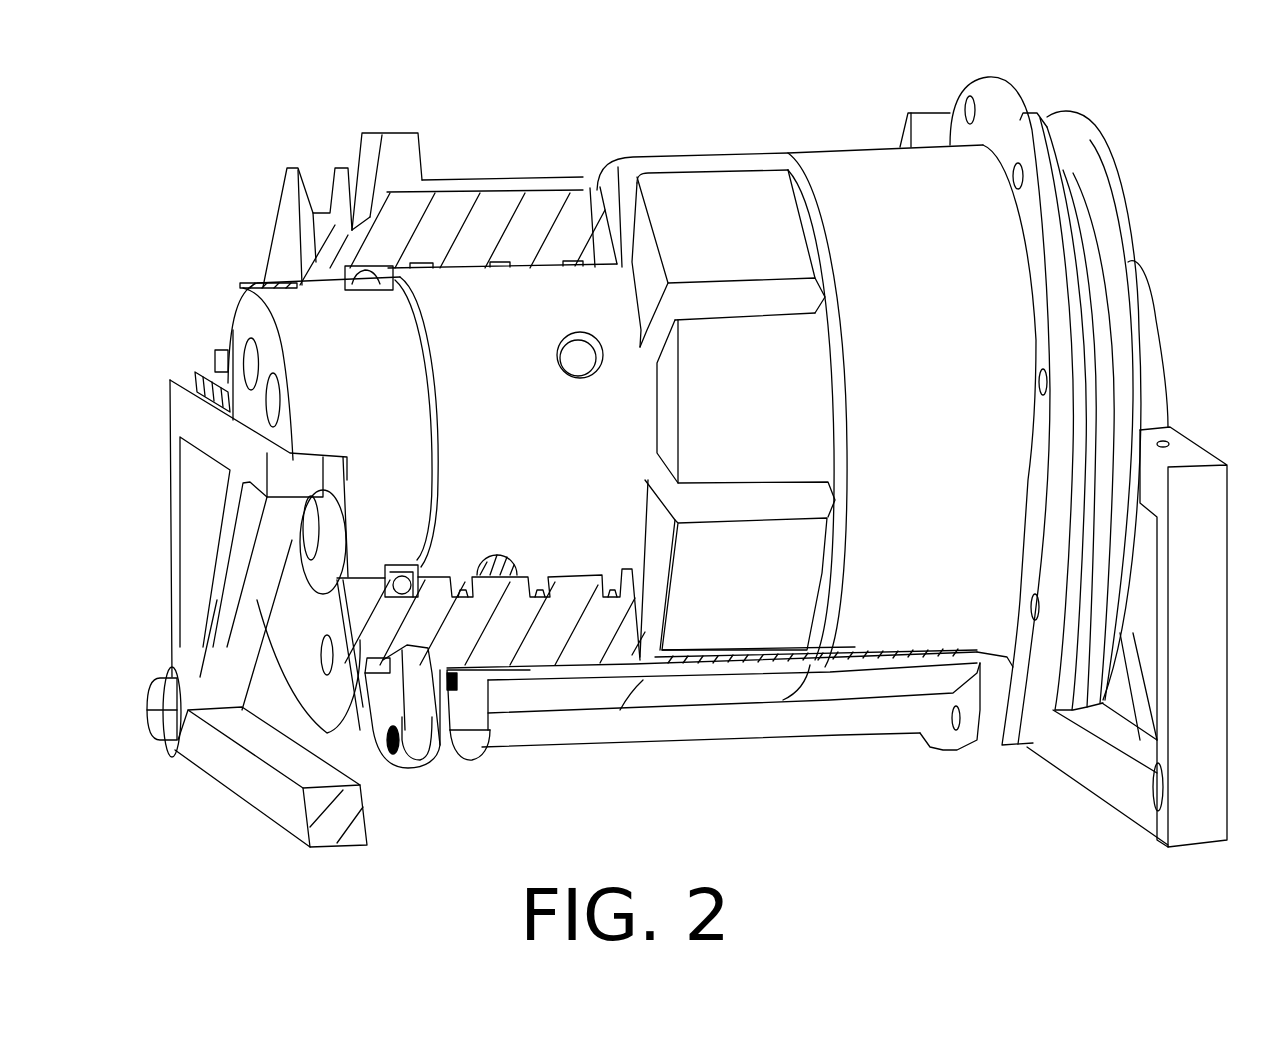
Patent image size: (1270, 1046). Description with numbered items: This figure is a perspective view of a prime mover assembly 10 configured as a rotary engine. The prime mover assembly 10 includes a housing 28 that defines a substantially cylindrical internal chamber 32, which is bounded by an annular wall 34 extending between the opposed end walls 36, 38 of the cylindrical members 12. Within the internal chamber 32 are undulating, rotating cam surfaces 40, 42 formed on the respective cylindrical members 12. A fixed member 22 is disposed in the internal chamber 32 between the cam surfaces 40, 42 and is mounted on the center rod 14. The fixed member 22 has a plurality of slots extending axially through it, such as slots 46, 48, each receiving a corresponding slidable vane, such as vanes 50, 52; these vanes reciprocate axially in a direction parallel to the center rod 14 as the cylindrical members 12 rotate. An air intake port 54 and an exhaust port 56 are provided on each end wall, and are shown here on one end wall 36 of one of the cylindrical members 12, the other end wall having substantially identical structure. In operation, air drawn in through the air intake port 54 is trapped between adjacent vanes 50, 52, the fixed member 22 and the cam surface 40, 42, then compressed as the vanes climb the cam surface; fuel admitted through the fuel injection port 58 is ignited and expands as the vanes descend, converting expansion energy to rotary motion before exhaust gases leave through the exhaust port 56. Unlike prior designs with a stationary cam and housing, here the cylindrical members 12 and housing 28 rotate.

The prime mover assembly 10 is at (225, 157).
The cylindrical members 12 is at (400, 227).
The center rod 14 is at (380, 528).
The fixed member 22 is at (797, 610).
The housing 28 is at (943, 722).
The internal chamber 32 is at (752, 660).
The annular wall 34 is at (464, 178).
The end wall 36 is at (1025, 717).
The end wall 38 is at (452, 748).
The undulating cam surface 40 is at (845, 505).
The undulating cam surface 42 is at (583, 191).
The slot 46 is at (637, 168).
The slot 48 is at (807, 270).
The vane 50 is at (782, 288).
The vane 52 is at (729, 160).
The air intake port 54 is at (243, 351).
The exhaust port 56 is at (273, 404).
The fuel injection port 58 is at (313, 542).